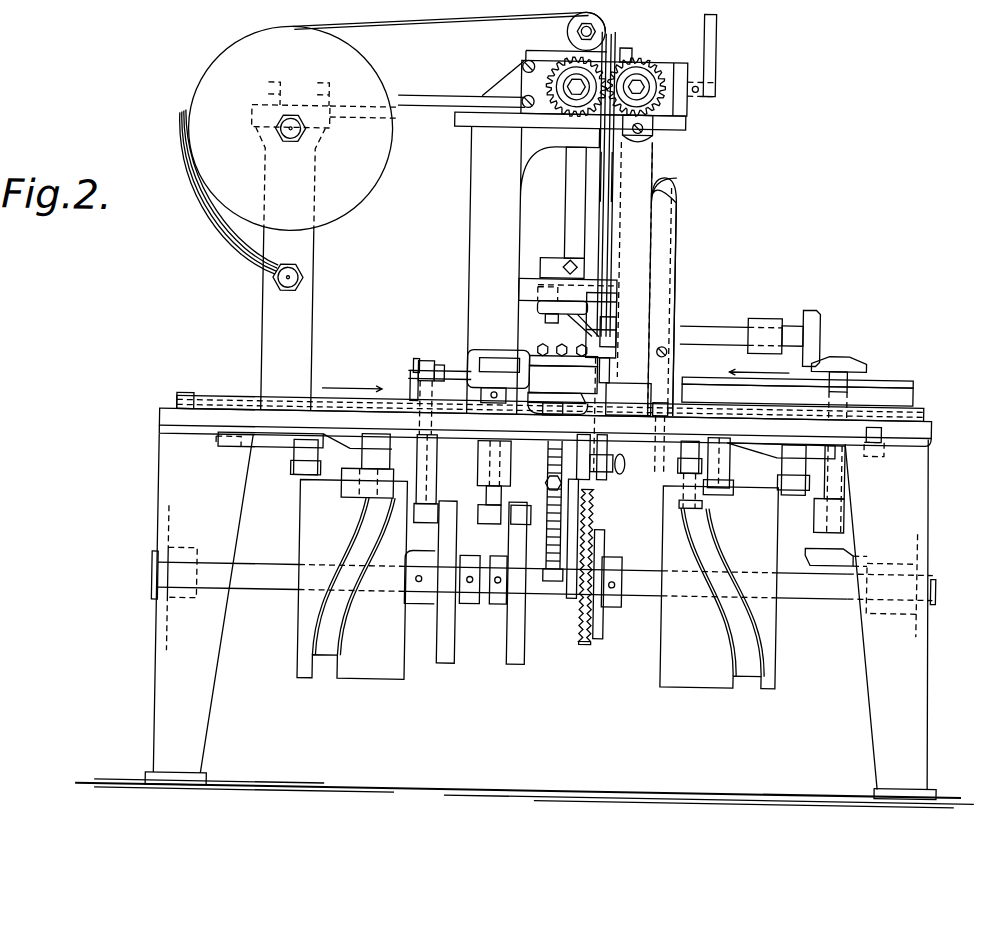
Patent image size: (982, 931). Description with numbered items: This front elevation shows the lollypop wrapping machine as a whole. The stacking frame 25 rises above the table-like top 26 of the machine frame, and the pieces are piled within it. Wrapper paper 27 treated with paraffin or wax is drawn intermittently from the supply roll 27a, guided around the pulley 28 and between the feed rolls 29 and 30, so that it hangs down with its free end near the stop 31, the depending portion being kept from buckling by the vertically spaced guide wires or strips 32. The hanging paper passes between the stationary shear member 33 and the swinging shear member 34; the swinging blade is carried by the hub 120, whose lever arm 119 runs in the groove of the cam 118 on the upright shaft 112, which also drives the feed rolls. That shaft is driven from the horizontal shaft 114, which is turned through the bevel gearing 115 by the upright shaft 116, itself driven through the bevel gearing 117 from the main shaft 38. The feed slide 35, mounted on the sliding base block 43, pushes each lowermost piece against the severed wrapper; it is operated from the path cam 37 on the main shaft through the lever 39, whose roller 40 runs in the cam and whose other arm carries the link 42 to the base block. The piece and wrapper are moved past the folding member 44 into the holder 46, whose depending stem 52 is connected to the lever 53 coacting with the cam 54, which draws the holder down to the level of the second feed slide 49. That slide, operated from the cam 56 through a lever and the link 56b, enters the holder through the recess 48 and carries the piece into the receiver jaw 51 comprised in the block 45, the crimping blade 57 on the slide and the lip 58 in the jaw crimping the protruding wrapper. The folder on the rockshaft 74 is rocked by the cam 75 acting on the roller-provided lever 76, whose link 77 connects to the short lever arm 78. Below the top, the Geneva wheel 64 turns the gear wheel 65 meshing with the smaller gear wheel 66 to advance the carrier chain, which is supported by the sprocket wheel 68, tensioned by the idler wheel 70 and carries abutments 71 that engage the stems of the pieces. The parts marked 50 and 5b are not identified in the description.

The supply roll 27a is at (287, 218).
The wrapper paper 27 is at (472, 22).
The pulley 28 is at (594, 30).
The feed roll 29 is at (516, 66).
The feed roll 30 is at (641, 58).
The guide wires or strips 32 is at (602, 180).
The upright shaft 112 is at (563, 211).
The stacking frame 25 is at (662, 224).
The cam 118 is at (520, 280).
The lever arm 119 is at (533, 300).
The hub 120 is at (533, 312).
The shear member 34 is at (593, 329).
The shear member 33 is at (610, 321).
The holder 46 is at (488, 356).
The folding member 44 is at (548, 356).
The block 45 is at (600, 363).
The receiver jaw 51 is at (516, 412).
The lip 58 is at (579, 409).
The block 50 is at (637, 428).
The table-like top 26 is at (927, 416).
The second feed slide 49 is at (415, 402).
The feed slide 35 is at (717, 374).
The sliding base block 43 is at (906, 388).
The horizontal shaft 114 is at (722, 324).
The bevel gearing 115 is at (835, 365).
The link 42 is at (879, 448).
The upright shaft 116 is at (845, 479).
The bevel gearing 117 is at (862, 562).
The roller 40 is at (682, 479).
The lever 39 is at (735, 495).
The path cam 37 is at (719, 587).
The cam 56 is at (352, 574).
The link 56b is at (270, 461).
The link 77 is at (437, 444).
The bolt 5b is at (440, 461).
The rockshaft 74 is at (428, 374).
The recess 48 is at (441, 365).
The crimping blade 57 is at (421, 375).
The short lever arm 78 is at (415, 362).
The depending stem 52 is at (486, 492).
The lever 53 is at (484, 527).
The roller-provided lever 76 is at (421, 527).
The cam 75 is at (458, 645).
The cam 54 is at (528, 641).
The main shaft 38 is at (155, 579).
The wheel 64 is at (600, 616).
The gear wheel 65 is at (588, 645).
The smaller gear wheel 66 is at (589, 494).
The idler wheel 70 is at (549, 548).
The sprocket wheel 68 is at (547, 482).
The abutments 71 is at (562, 566).
The stop 31 is at (608, 456).